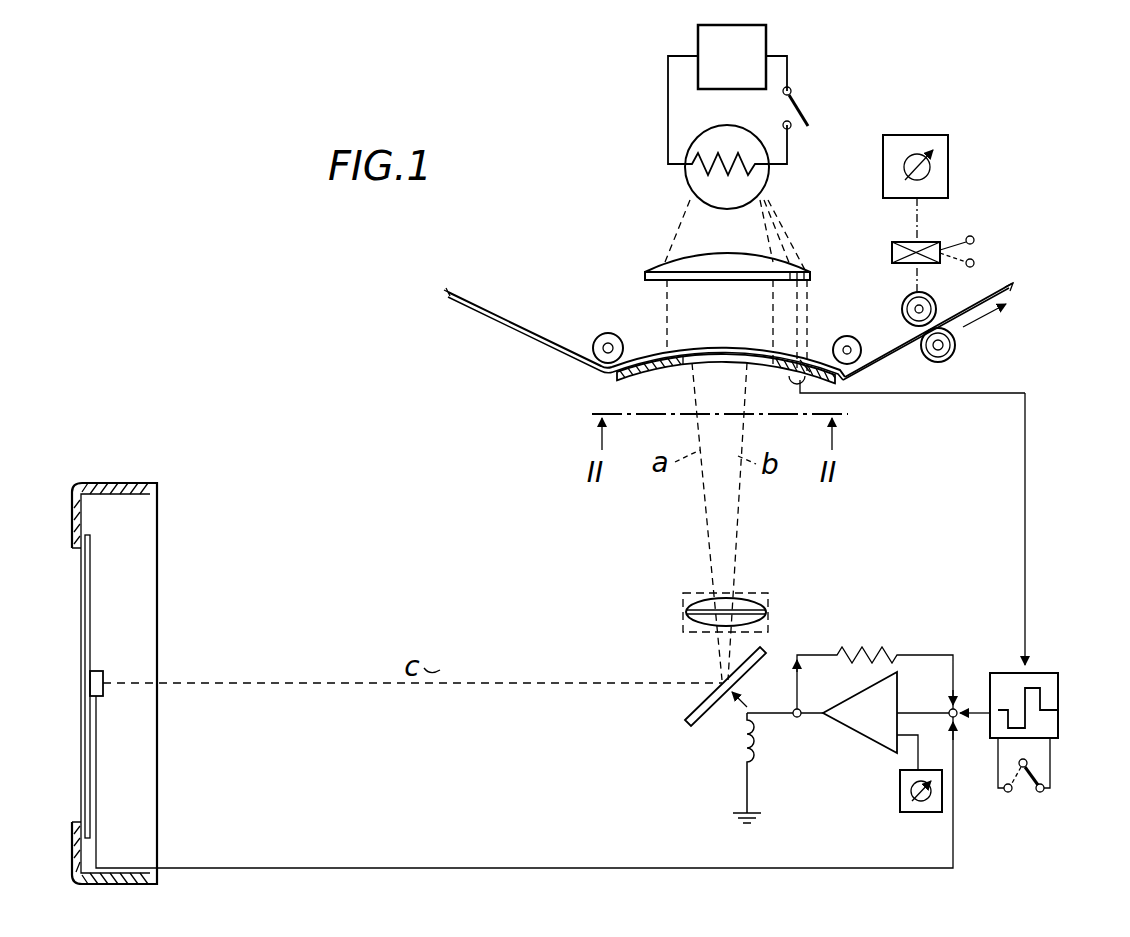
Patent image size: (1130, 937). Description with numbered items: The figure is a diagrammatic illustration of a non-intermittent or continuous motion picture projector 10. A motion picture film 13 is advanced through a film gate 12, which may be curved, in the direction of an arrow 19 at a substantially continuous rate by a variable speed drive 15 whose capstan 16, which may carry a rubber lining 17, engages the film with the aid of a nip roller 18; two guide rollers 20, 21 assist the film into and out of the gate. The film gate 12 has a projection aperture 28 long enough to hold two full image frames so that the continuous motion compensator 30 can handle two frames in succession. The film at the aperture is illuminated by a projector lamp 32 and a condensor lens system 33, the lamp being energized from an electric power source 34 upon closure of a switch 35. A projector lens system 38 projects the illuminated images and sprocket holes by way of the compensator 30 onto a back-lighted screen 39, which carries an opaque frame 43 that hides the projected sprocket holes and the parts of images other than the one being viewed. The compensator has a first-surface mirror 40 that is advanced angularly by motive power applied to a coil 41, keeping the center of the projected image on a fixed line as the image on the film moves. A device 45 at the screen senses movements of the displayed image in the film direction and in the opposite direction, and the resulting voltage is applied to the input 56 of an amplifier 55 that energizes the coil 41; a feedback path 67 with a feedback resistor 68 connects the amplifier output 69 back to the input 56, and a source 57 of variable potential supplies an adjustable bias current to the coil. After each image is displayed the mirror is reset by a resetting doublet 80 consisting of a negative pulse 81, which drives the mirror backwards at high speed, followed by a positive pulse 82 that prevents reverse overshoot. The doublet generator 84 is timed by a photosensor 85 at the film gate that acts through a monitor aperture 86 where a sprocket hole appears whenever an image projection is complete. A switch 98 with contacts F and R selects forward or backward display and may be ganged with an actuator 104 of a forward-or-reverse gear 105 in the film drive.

The non-intermittent or continuous motion picture projector 10 is at (522, 563).
The film gate 12 is at (617, 378).
The motion picture film 13 is at (500, 322).
The variable speed drive 15 is at (883, 172).
The capstan 16 is at (902, 309).
The rubber lining 17 is at (905, 295).
The nip roller 18 is at (956, 348).
The arrow 19 is at (994, 318).
The guide roller 20 is at (606, 333).
The guide roller 21 is at (862, 362).
The projection aperture 28 is at (688, 364).
The continuous motion compensator 30 is at (748, 697).
The projector lamp 32 is at (690, 178).
The condensor lens system 33 is at (648, 268).
The electric power source 34 is at (698, 47).
The switch 35 is at (804, 106).
The projector lens system 38 is at (686, 612).
The back-lighted screen 39 is at (90, 568).
The first-surface mirror 40 is at (686, 720).
The coil 41 is at (740, 752).
The opaque frame 43 is at (124, 483).
The device 45 is at (100, 671).
The amplifier 55 is at (854, 694).
The input 56 is at (960, 708).
The source of variable electric potential or current 57 is at (900, 794).
The feedback path 67 is at (953, 653).
The feedback resistor 68 is at (890, 648).
The amplifier output 69 is at (800, 720).
The resetting doublet 80 is at (1058, 728).
The negative pulse 81 is at (998, 748).
The positive pulse 82 is at (1045, 698).
The doublet generator 84 is at (1052, 676).
The photosensor 85 is at (792, 380).
The monitor aperture 86 is at (803, 357).
The switch 98 is at (1050, 772).
The actuator 104 is at (968, 236).
The forward-or-reverse gear 105 is at (892, 250).